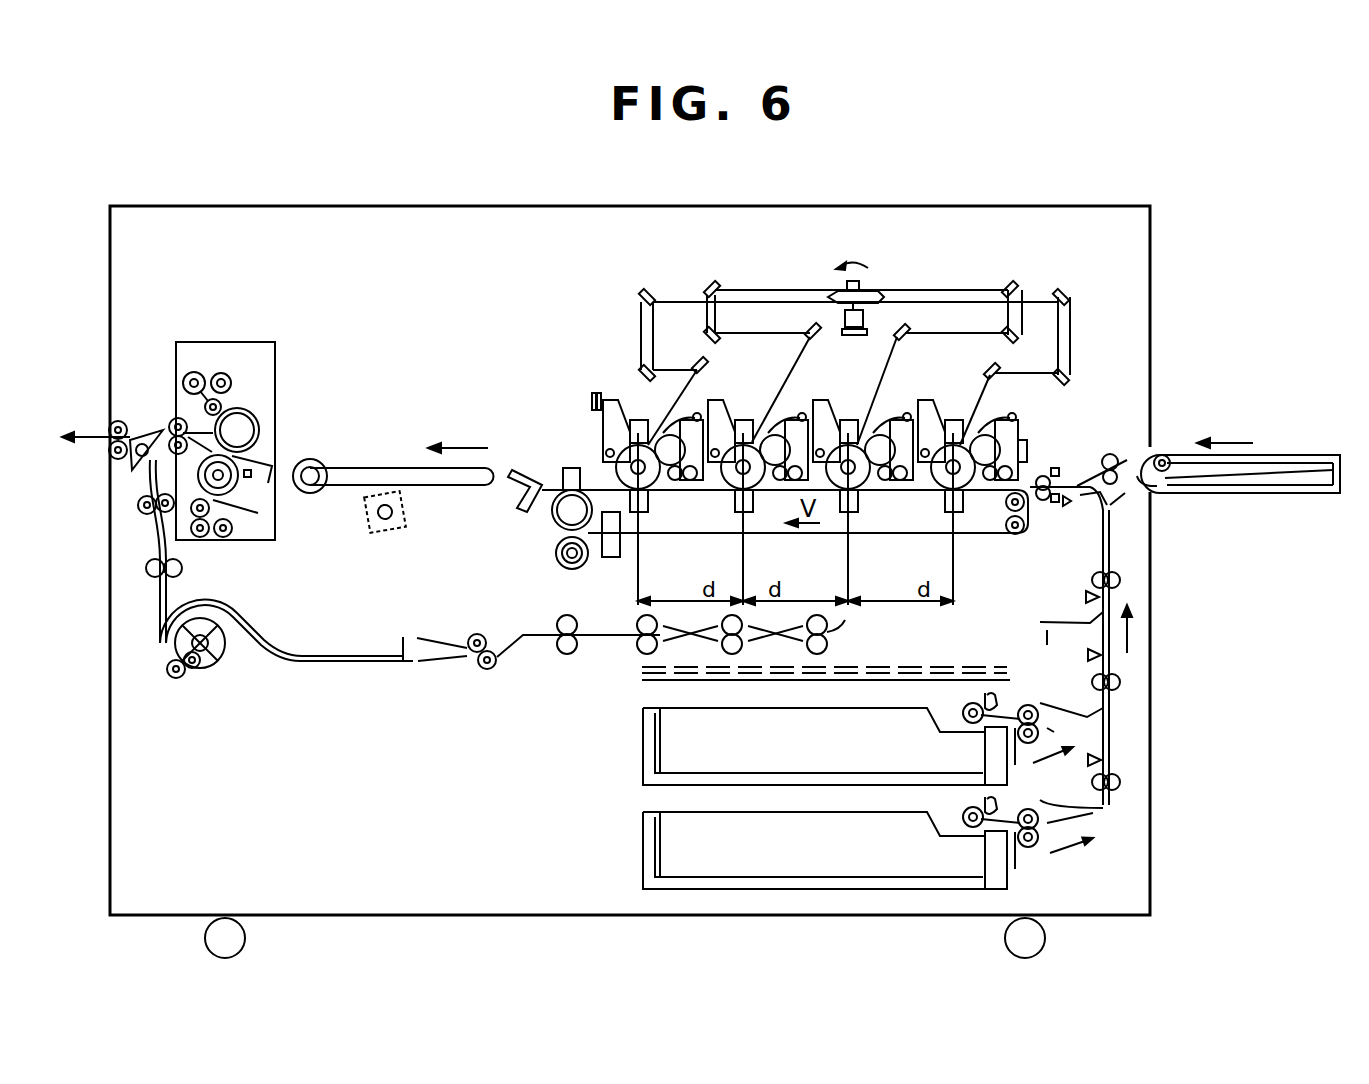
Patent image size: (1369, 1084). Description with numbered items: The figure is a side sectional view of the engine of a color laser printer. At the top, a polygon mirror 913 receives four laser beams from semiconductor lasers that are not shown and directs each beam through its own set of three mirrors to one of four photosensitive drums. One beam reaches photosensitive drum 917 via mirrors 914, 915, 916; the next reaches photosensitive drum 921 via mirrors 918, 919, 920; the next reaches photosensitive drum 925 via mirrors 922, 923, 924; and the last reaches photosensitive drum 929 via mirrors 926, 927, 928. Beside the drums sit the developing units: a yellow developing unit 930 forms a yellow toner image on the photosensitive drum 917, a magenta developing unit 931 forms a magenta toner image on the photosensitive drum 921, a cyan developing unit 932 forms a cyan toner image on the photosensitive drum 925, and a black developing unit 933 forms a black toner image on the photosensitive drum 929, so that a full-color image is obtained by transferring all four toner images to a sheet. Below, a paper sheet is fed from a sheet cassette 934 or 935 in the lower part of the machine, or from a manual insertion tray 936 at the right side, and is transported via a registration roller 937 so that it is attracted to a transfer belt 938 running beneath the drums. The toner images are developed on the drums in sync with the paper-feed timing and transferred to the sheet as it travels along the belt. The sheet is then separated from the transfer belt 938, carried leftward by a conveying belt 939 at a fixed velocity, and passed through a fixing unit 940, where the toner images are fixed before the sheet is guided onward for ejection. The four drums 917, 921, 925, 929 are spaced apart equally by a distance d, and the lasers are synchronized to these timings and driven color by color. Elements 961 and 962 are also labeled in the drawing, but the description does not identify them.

The polygon mirror 913 is at (843, 292).
The mirror 914 is at (1067, 293).
The mirror 915 is at (1068, 376).
The mirror 916 is at (984, 372).
The photosensitive drum 917 is at (937, 493).
The mirror 918 is at (1014, 284).
The mirror 919 is at (1000, 336).
The mirror 920 is at (908, 324).
The photosensitive drum 921 is at (831, 492).
The mirror 922 is at (715, 286).
The mirror 923 is at (718, 341).
The mirror 924 is at (818, 340).
The photosensitive drum 925 is at (718, 491).
The mirror 926 is at (649, 290).
The mirror 927 is at (643, 375).
The mirror 928 is at (697, 360).
The photosensitive drum 929 is at (630, 522).
The yellow developing unit 930 is at (1003, 483).
The magenta developing unit 931 is at (888, 483).
The cyan developing unit 932 is at (787, 483).
The black developing unit 933 is at (680, 481).
The sheet cassette 934 is at (643, 745).
The sheet cassette 935 is at (643, 858).
The manual insertion tray 936 is at (1273, 495).
The registration roller 937 is at (1038, 480).
The transfer belt 938 is at (1026, 518).
The conveying belt 939 is at (368, 465).
The fixing unit 940 is at (278, 373).
The fixing rollers 961 is at (628, 518).
The sensor 962 is at (522, 512).